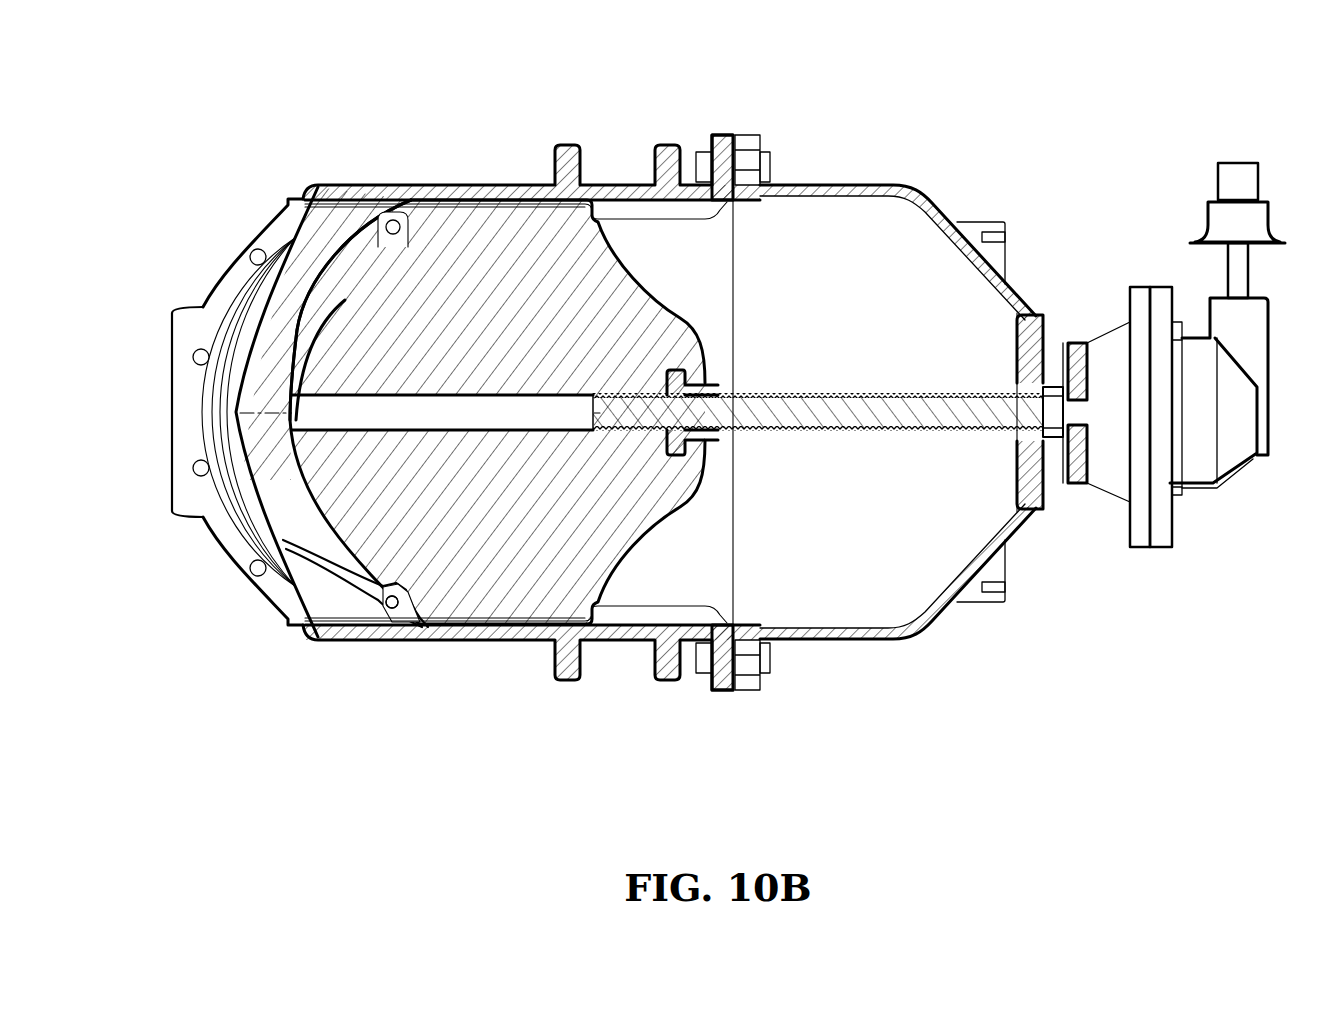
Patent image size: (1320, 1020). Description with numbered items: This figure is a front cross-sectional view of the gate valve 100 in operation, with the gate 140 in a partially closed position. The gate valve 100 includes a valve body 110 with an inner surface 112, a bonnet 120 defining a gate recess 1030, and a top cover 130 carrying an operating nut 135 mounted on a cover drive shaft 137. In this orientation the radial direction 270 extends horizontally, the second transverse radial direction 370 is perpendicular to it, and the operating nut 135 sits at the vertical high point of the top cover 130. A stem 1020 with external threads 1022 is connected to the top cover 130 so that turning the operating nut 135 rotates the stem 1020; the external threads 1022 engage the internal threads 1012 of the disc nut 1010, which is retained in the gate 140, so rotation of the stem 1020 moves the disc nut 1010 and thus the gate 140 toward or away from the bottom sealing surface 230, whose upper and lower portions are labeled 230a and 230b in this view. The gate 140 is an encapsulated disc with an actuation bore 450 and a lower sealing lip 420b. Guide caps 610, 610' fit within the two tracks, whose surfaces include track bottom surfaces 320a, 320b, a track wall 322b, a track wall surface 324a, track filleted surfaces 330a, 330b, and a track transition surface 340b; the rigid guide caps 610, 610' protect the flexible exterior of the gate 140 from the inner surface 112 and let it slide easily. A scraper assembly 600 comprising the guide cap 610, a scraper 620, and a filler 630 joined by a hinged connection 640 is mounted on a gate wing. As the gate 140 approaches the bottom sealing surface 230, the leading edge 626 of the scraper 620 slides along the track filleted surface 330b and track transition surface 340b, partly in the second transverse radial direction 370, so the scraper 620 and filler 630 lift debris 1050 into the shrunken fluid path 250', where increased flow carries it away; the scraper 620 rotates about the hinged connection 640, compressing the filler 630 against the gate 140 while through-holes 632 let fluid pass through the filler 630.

The gate valve 100 is at (970, 128).
The valve body 110 is at (317, 187).
The inner surface 112 is at (673, 286).
The bonnet 120 is at (669, 416).
The top cover 130 is at (1217, 437).
The operating nut 135 is at (1240, 175).
The cover drive shaft 137 is at (1237, 280).
The gate 140 is at (650, 625).
The bottom sealing surface 230 is at (254, 381).
The upper diaphragm shell 230a is at (607, 207).
The lower diaphragm shell 230b is at (598, 605).
The shrunken fluid path 250' is at (195, 288).
The radial direction 270 is at (370, 417).
The track bottom surface 320a is at (664, 206).
The track bottom surface 320b is at (623, 620).
The track wall 322b is at (625, 200).
The track wall surface 324a is at (736, 648).
The track filleted surface 330a is at (330, 225).
The track filleted surface 330b is at (330, 600).
The track transition surface 340b is at (270, 540).
The second transverse radial direction 370 is at (294, 430).
The lower sealing lip 420b is at (274, 488).
The actuation bore 450 is at (462, 394).
The scraper assembly 600 is at (452, 632).
The guide cap 610 is at (526, 675).
The guide cap 610' is at (497, 141).
The scraper 620 is at (365, 598).
The leading edge 626 is at (270, 585).
The filler 630 is at (300, 604).
The through-holes 632 is at (285, 592).
The hinged connection 640 is at (393, 609).
The disc nut 1010 is at (986, 536).
The internal threads 1012 is at (706, 455).
The stem 1020 is at (615, 535).
The external threads 1022 is at (1014, 508).
The gate recess 1030 is at (958, 268).
The debris 1050 is at (250, 566).